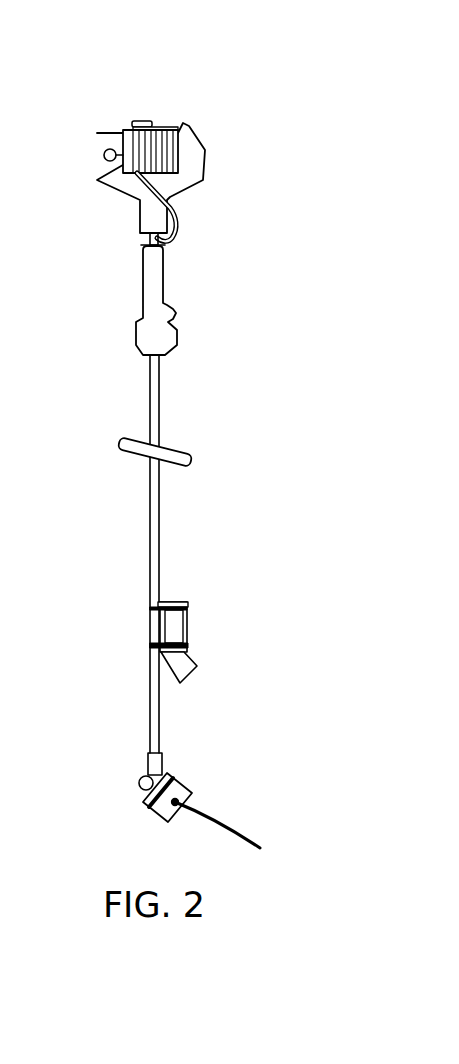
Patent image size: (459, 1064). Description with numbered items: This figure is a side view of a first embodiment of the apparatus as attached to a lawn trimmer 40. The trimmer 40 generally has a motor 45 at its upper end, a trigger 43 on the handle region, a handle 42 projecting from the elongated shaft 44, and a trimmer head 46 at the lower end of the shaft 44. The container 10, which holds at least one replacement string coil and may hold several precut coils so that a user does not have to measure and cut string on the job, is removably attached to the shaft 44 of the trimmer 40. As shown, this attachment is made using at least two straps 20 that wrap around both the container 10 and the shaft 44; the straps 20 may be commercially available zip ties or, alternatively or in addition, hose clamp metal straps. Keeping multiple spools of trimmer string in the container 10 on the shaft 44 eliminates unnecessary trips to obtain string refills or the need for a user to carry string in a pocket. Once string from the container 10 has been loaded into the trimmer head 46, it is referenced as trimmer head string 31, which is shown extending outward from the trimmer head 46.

The container 10 is at (172, 601).
The straps 20 is at (150, 646).
The trimmer head string 31 is at (223, 833).
The lawn trimmer 40 is at (232, 282).
The handle 42 is at (128, 454).
The trigger 43 is at (177, 314).
The shaft 44 is at (161, 392).
The motor 45 is at (121, 132).
The trimmer head 46 is at (187, 782).